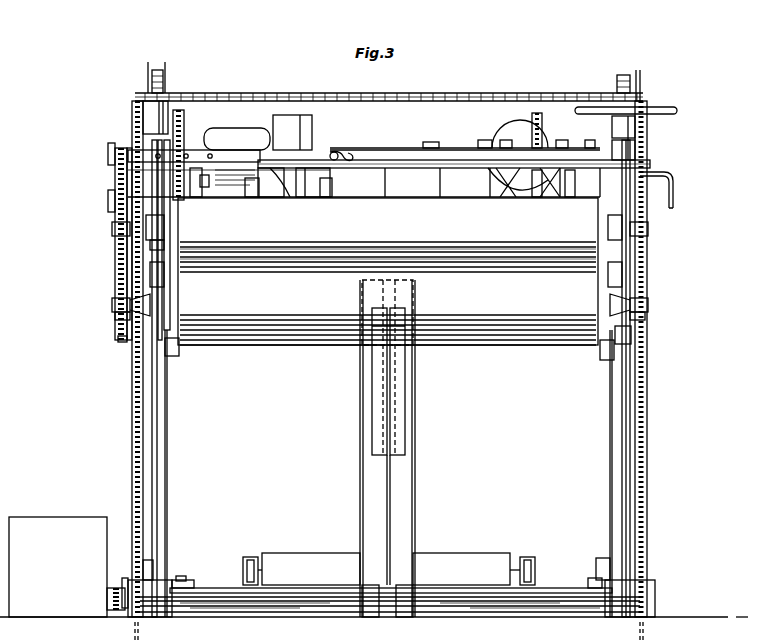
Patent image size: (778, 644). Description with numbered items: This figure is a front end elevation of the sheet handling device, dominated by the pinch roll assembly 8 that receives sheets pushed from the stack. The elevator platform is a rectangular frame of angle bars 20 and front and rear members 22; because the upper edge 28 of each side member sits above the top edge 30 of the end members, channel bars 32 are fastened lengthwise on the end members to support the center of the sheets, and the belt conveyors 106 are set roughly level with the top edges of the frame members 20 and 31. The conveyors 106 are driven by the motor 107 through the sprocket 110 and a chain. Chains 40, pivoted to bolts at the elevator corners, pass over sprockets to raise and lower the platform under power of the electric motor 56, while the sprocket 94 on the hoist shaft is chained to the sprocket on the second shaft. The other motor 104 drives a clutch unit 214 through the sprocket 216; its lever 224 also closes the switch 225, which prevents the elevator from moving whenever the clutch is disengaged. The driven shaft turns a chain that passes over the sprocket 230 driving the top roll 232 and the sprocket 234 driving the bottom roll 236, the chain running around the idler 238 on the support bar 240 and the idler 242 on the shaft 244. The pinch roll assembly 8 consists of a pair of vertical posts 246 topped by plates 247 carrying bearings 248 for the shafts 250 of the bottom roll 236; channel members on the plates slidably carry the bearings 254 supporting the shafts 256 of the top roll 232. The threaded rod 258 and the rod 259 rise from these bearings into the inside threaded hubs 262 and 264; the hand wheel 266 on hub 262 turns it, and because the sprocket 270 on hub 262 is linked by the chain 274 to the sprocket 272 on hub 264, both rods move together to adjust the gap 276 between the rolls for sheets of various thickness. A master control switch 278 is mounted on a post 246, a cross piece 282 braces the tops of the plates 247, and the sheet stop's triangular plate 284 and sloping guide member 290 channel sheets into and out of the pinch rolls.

The pinch roll assembly 8 is at (262, 357).
The angle bars 20 is at (610, 572).
The front and rear members 22 is at (226, 606).
The upper edge 28 is at (170, 565).
The top edge 30 is at (198, 582).
The frame member 31 is at (243, 572).
The channel bars 32 is at (252, 558).
The chains 40 is at (133, 432).
The electric motor 56 is at (508, 128).
The sprocket 94 is at (185, 126).
The motor 104 is at (262, 120).
The belt conveyors 106 is at (326, 546).
The motor 107 is at (62, 508).
The sprocket 110 is at (108, 594).
The clutch unit 214 is at (306, 160).
The sprocket 216 is at (332, 195).
The lever 224 is at (280, 192).
The switch 225 is at (350, 159).
The sprocket 230 is at (118, 258).
The top roll 232 is at (537, 272).
The sprocket 234 is at (120, 338).
The bottom roll 236 is at (345, 352).
The idler 238 is at (108, 200).
The support bar 240 is at (114, 178).
The idler 242 is at (135, 142).
The shaft 244 is at (108, 154).
The vertical posts 246 is at (168, 478).
The plates 247 is at (172, 348).
The bearings 248 is at (115, 317).
The shafts 250 is at (112, 304).
The bearings 254 is at (162, 236).
The shafts 256 is at (112, 229).
The threaded rod 258 is at (628, 74).
The rod 259 is at (162, 78).
The inside threaded hub 262 is at (636, 128).
The inside threaded hub 264 is at (145, 112).
The hand wheel 266 is at (676, 110).
The sprocket 270 is at (640, 86).
The sprocket 272 is at (148, 90).
The chain 274 is at (492, 94).
The gap 276 is at (327, 275).
The master control switch 278 is at (632, 338).
The cross piece 282 is at (462, 150).
The triangular plate 284 is at (406, 492).
The sloping guide member 290 is at (406, 420).